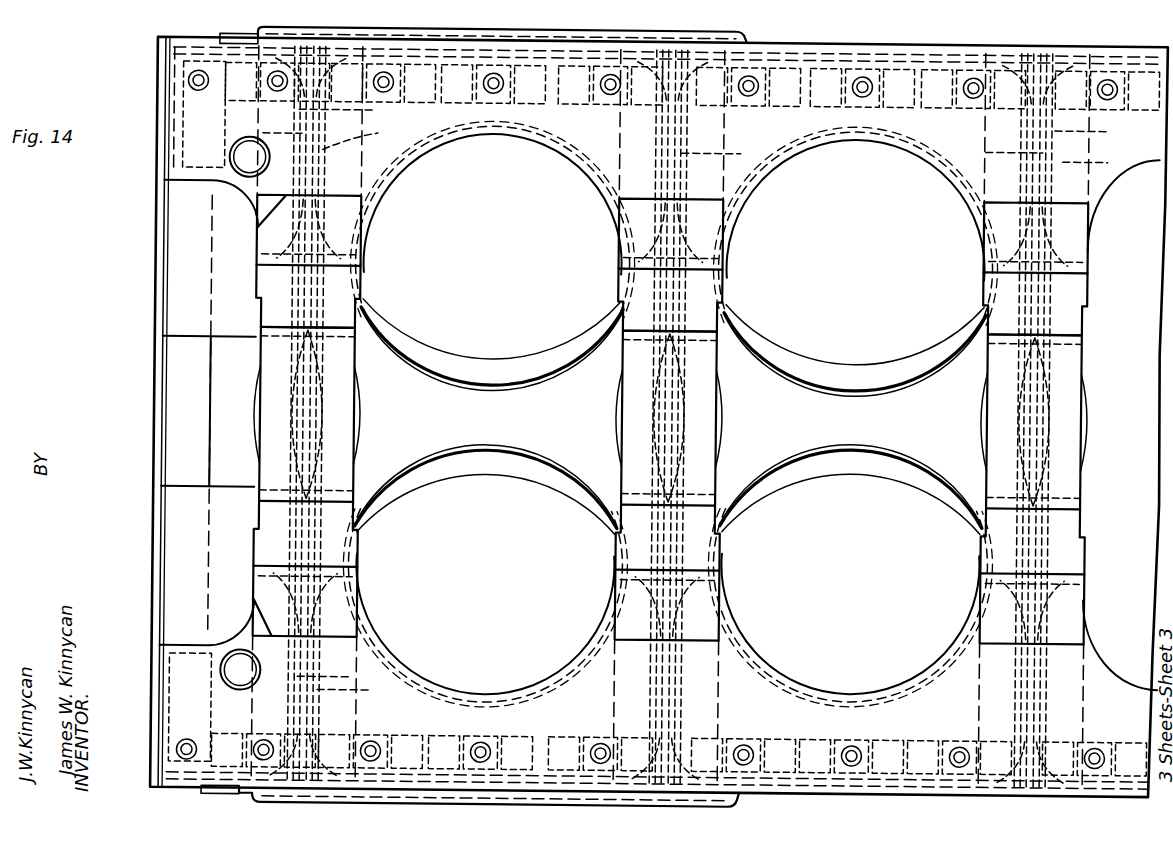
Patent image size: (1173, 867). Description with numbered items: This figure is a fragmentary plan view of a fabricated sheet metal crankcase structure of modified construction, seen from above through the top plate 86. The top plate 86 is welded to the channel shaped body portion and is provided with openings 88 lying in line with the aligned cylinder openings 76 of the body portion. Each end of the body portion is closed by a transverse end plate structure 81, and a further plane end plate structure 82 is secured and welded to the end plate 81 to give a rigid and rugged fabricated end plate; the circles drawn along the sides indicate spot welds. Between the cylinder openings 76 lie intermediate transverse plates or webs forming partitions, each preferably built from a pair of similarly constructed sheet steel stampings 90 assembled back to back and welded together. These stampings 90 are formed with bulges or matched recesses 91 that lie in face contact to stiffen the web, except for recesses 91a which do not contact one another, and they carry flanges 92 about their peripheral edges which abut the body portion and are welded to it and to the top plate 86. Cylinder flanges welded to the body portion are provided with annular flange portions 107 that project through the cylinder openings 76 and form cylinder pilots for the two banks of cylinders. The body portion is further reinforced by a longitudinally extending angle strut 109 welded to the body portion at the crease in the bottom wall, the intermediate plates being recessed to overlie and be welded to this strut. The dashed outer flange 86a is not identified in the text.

The transverse end plate structure 81 is at (160, 110).
The plane end plate structure 82 is at (146, 274).
The angle strut 109 is at (160, 345).
The bulges or matched recesses 91 is at (723, 262).
The flanges 92 is at (283, 64).
The recesses 91a is at (703, 391).
The sheet steel stampings 90 is at (727, 413).
The top plate 86 is at (439, 140).
The flange 86a is at (360, 209).
The openings 88 is at (579, 190).
The annular flange portions 107 is at (516, 384).
The cylinder openings 76 is at (546, 340).